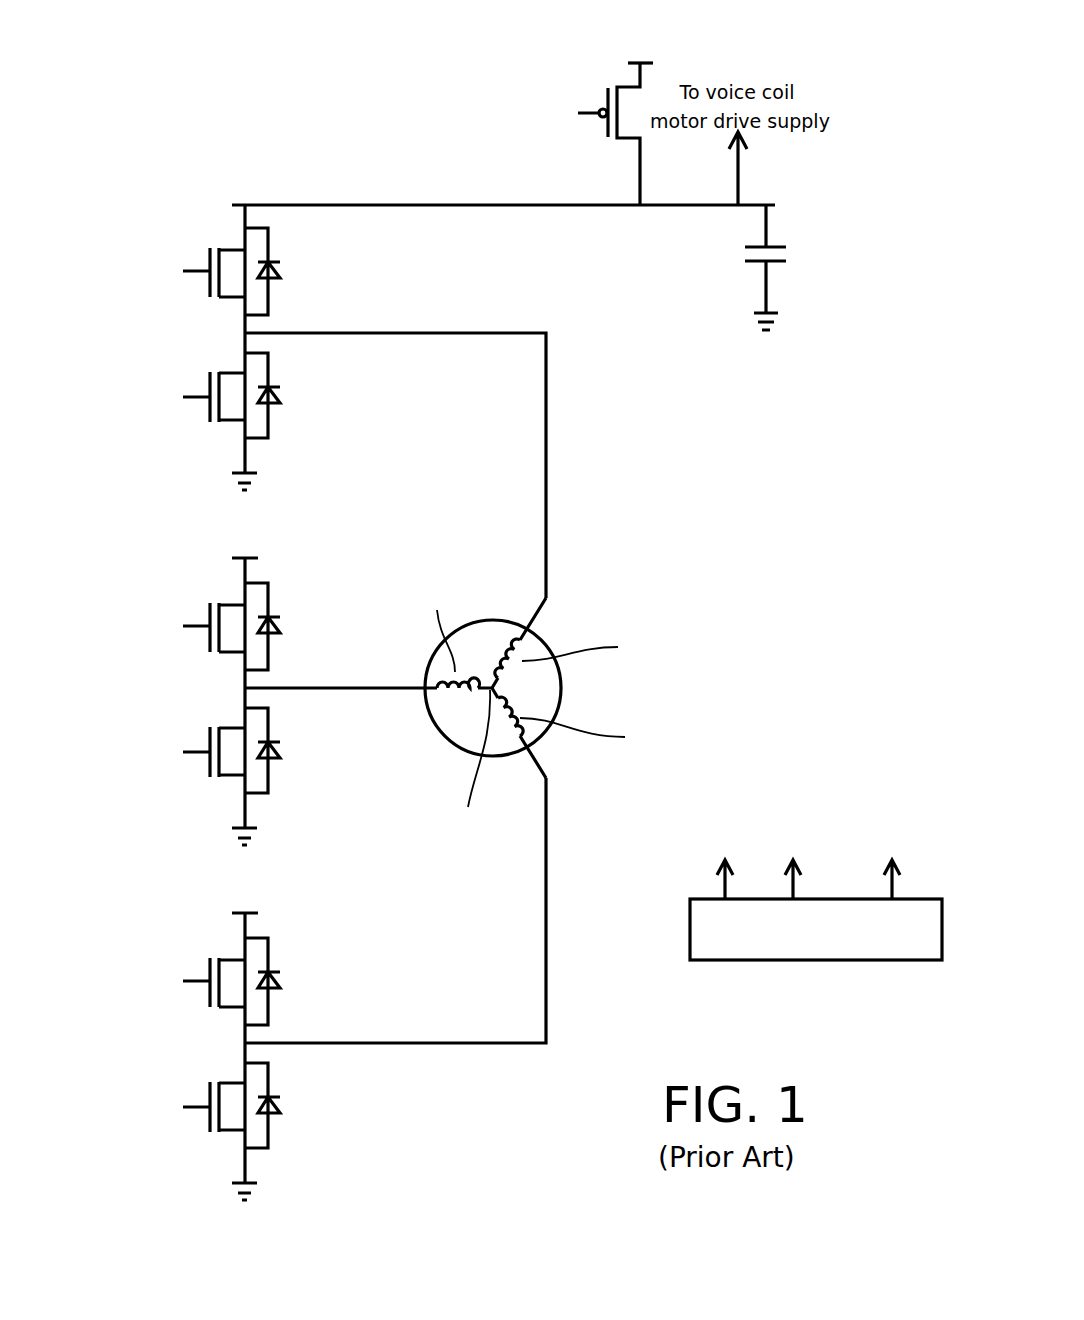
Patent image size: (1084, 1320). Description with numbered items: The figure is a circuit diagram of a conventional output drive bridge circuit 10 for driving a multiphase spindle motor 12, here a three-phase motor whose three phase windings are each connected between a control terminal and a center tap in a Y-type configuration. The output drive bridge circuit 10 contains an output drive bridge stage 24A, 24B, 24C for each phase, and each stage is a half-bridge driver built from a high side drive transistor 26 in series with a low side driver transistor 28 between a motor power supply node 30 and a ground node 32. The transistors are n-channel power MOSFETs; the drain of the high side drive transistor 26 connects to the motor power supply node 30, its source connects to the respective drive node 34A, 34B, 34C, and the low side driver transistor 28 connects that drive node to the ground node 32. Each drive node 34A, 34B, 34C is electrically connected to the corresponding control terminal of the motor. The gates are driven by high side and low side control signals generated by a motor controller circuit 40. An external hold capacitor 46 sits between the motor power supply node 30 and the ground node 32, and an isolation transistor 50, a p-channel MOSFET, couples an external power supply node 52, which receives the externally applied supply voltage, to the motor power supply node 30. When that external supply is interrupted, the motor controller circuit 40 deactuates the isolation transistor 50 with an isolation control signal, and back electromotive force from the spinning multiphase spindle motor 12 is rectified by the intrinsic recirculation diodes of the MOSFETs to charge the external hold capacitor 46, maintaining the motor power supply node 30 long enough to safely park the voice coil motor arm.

The output drive bridge circuit 10 is at (125, 203).
The multiphase spindle motor 12 is at (562, 700).
The output drive bridge stage 24A is at (162, 340).
The output drive bridge stage 24B is at (199, 695).
The output drive bridge stage 24C is at (182, 1050).
The high side drive transistor 26 is at (217, 245).
The low side driver transistor 28 is at (213, 425).
The motor power supply node 30 is at (380, 205).
The ground node 32 is at (257, 482).
The drive node 34A is at (360, 338).
The drive node 34B is at (350, 693).
The drive node 34C is at (360, 1048).
The motor controller circuit 40 is at (838, 962).
The external hold capacitor 46 is at (786, 255).
The isolation transistor 50 is at (617, 82).
The external power supply node 52 is at (656, 63).